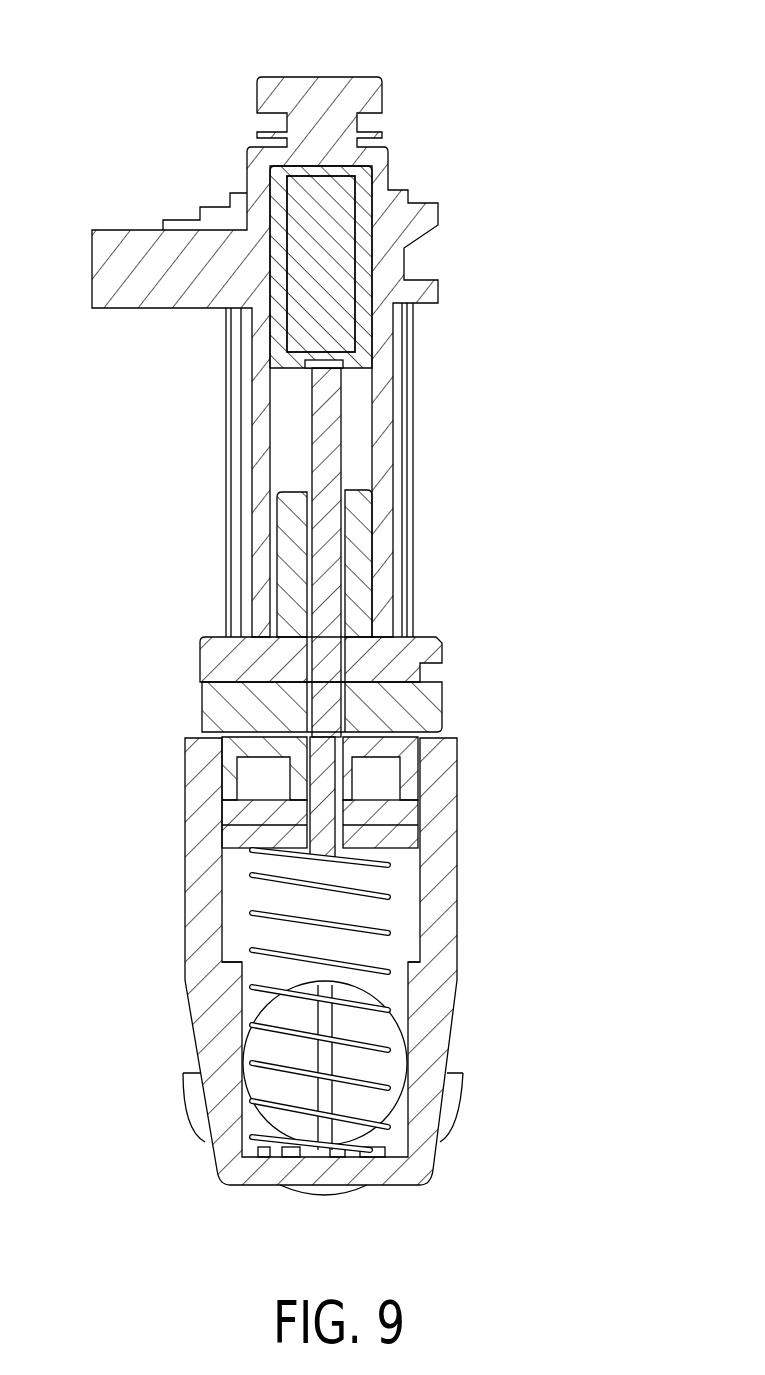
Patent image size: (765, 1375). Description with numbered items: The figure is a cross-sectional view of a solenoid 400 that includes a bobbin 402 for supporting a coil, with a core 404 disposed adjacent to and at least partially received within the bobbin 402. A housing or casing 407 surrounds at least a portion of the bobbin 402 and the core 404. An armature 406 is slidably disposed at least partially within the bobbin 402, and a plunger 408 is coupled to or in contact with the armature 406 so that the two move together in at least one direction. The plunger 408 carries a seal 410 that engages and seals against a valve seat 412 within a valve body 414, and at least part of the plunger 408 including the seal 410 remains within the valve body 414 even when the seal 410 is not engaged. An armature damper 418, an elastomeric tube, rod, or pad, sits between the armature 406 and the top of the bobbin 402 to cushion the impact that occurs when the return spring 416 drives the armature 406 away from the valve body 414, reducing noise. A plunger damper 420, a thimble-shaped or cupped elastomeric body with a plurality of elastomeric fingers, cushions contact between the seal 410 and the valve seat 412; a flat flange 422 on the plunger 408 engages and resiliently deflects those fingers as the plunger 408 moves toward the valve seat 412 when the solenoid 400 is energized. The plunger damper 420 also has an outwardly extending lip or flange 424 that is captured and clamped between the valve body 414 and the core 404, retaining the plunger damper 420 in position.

The solenoid 400 is at (168, 104).
The bobbin 402 is at (438, 647).
The core 404 is at (430, 698).
The armature 406 is at (365, 345).
The housing or casing 407 is at (413, 424).
The plunger 408 is at (327, 505).
The seal 410 is at (410, 835).
The valve seat 412 is at (410, 955).
The valve body 414 is at (438, 932).
The return spring 416 is at (387, 1090).
The armature damper 418 is at (337, 223).
The plunger damper 420 is at (238, 812).
The flange 422 is at (250, 745).
The flange 424 is at (440, 727).